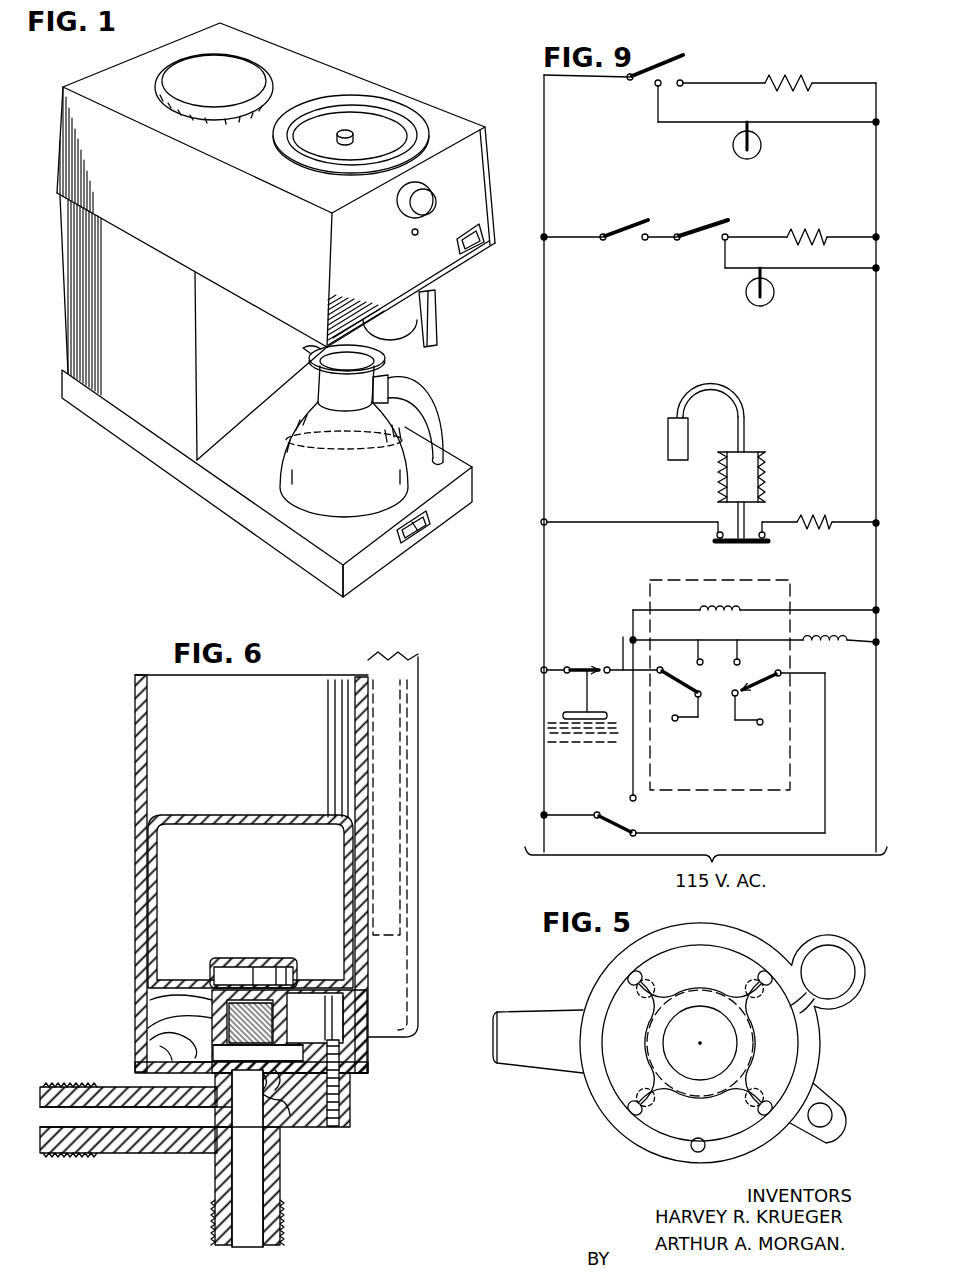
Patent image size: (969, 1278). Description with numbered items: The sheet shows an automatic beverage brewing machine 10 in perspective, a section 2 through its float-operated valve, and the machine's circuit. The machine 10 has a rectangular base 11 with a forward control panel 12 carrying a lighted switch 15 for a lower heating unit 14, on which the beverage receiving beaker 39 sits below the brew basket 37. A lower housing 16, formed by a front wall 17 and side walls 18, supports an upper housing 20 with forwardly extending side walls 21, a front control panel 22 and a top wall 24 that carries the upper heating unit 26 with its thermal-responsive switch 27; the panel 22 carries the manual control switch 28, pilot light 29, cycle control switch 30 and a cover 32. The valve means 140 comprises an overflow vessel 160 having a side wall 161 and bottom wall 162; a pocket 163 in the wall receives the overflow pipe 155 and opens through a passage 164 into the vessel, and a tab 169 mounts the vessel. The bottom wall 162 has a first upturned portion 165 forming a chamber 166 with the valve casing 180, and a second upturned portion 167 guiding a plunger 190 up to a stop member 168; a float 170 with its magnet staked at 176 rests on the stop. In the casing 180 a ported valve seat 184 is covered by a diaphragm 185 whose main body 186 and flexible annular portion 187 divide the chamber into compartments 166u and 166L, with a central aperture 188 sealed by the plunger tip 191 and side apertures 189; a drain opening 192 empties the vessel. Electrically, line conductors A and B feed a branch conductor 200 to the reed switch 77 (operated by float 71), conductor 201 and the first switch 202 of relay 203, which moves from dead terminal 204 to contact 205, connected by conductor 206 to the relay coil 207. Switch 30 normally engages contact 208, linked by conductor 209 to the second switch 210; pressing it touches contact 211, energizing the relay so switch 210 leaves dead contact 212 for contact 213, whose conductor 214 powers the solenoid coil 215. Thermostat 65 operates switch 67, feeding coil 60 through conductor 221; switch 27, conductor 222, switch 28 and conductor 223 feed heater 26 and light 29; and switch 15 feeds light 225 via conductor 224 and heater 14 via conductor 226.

In FIG. 1, the section line 2- 2 is at (101, 52).
In FIG. 1, the automatic beverage brewing machine 10 is at (272, 307).
In FIG. 1, the base portion 11 is at (267, 484).
In FIG. 1, the forward control panel 12 is at (369, 562).
In FIG. 9, the lower heating unit 14 is at (797, 83).
In FIG. 1, the lighted switch 15 is at (421, 536).
In FIG. 9, the lighted switch 15 is at (641, 85).
In FIG. 1, the lower housing 16 is at (176, 328).
In FIG. 1, the front wall 17 is at (248, 359).
In FIG. 1, the side walls 18 is at (161, 362).
In FIG. 1, the upper housing 20 is at (272, 181).
In FIG. 1, the forwardly extending side walls 21 is at (234, 231).
In FIG. 1, the front control panel 22 is at (468, 177).
In FIG. 1, the top wall 24 is at (291, 66).
In FIG. 1, the upper heating unit 26 is at (376, 128).
In FIG. 9, the upper heating unit 26 is at (812, 237).
In FIG. 1, the thermal-responsive switch 27 is at (348, 130).
In FIG. 9, the thermal-responsive switch 27 is at (634, 229).
In FIG. 1, the manual control switch 28 is at (400, 211).
In FIG. 9, the manual control switch 28 is at (716, 229).
In FIG. 1, the pilot light 29 is at (413, 236).
In FIG. 9, the pilot light 29 is at (775, 293).
In FIG. 1, the cycle control switch 30 is at (477, 254).
In FIG. 9, the cycle control switch 30 is at (612, 824).
In FIG. 1, the reservoir cover 32 is at (232, 66).
In FIG. 1, the brew basket 37 is at (393, 319).
In FIG. 1, the beverage receiving beaker 39 is at (291, 437).
In FIG. 9, the heating coil 60 is at (821, 522).
In FIG. 9, the thermostat 65 is at (676, 441).
In FIG. 9, the tank thermostat switch 67 is at (722, 545).
In FIG. 9, the float 71 is at (575, 712).
In FIG. 9, the float actuated reed switch 77 is at (590, 668).
In FIG. 9, the line conductor A is at (546, 371).
In FIG. 9, the line conductor B is at (876, 376).
In FIG. 6, the float-operated magnetically controlled valve means 140 is at (259, 949).
In FIG. 6, the overflow pipe 155 is at (390, 822).
In FIG. 6, the overflow vessel 160 is at (223, 874).
In FIG. 5, the overflow vessel 160 is at (721, 1047).
In FIG. 6, the side wall 161 is at (135, 941).
In FIG. 5, the side wall 161 is at (755, 941).
In FIG. 6, the bottom wall 162 is at (212, 1031).
In FIG. 5, the bottom wall 162 is at (660, 951).
In FIG. 6, the pocket 163 is at (408, 678).
In FIG. 5, the pocket 163 is at (838, 941).
In FIG. 6, the passage 164 is at (350, 681).
In FIG. 5, the passage 164 is at (795, 977).
In FIG. 6, the first upturned portion 165 is at (212, 1016).
In FIG. 6, the chamber 166 is at (316, 1078).
In FIG. 5, the chamber 166 is at (696, 1000).
In FIG. 6, the upper compartment 166u is at (301, 1052).
In FIG. 6, the lower compartment 166L is at (284, 1076).
In FIG. 6, the second upturned portion 167 is at (142, 1014).
In FIG. 6, the upper stop member 168 is at (287, 1064).
In FIG. 5, the upper stop member 168 is at (710, 1026).
In FIG. 5, the outwardly extending tab 169 is at (836, 1121).
In FIG. 6, the float 170 is at (228, 812).
In FIG. 6, the heat stake 176 is at (212, 966).
In FIG. 6, the valve casing 180 is at (101, 1157).
In FIG. 5, the valve casing 180 is at (572, 1079).
In FIG. 6, the ported valve seat 184 is at (233, 1106).
In FIG. 6, the flexible diaphragm 185 is at (282, 1092).
In FIG. 6, the main body portion 186 is at (270, 1092).
In FIG. 6, the flexible annular portion 187 is at (182, 1086).
In FIG. 6, the central aperture 188 is at (234, 1156).
In FIG. 6, the side apertures 189 is at (256, 1055).
In FIG. 6, the plunger 190 is at (226, 1010).
In FIG. 6, the pointed tip 191 is at (305, 1024).
In FIG. 5, the drain opening 192 is at (697, 1153).
In FIG. 9, the branch conductor 200 is at (560, 670).
In FIG. 9, the conductor 201 is at (623, 637).
In FIG. 9, the first switch 202 is at (681, 681).
In FIG. 9, the double pole, double throw relay 203 is at (791, 593).
In FIG. 9, the dead terminal 204 is at (674, 721).
In FIG. 9, the contact 205 is at (700, 656).
In FIG. 9, the conductor 206 is at (633, 752).
In FIG. 9, the relay coil 207 is at (712, 606).
In FIG. 9, the contact 208 is at (636, 836).
In FIG. 9, the conductor 209 is at (752, 833).
In FIG. 9, the second switch 210 is at (762, 682).
In FIG. 9, the second contact 211 is at (636, 801).
In FIG. 9, the dead contact 212 is at (760, 725).
In FIG. 9, the contact 213 is at (734, 666).
In FIG. 9, the conductor 214 is at (800, 645).
In FIG. 9, the solenoid coil 215 is at (838, 640).
In FIG. 9, the conductor 221 is at (783, 522).
In FIG. 9, the conductor 222 is at (660, 240).
In FIG. 9, the conductor 223 is at (725, 258).
In FIG. 9, the conductor 224 is at (715, 123).
In FIG. 9, the light 225 is at (761, 145).
In FIG. 9, the conductor 226 is at (727, 83).